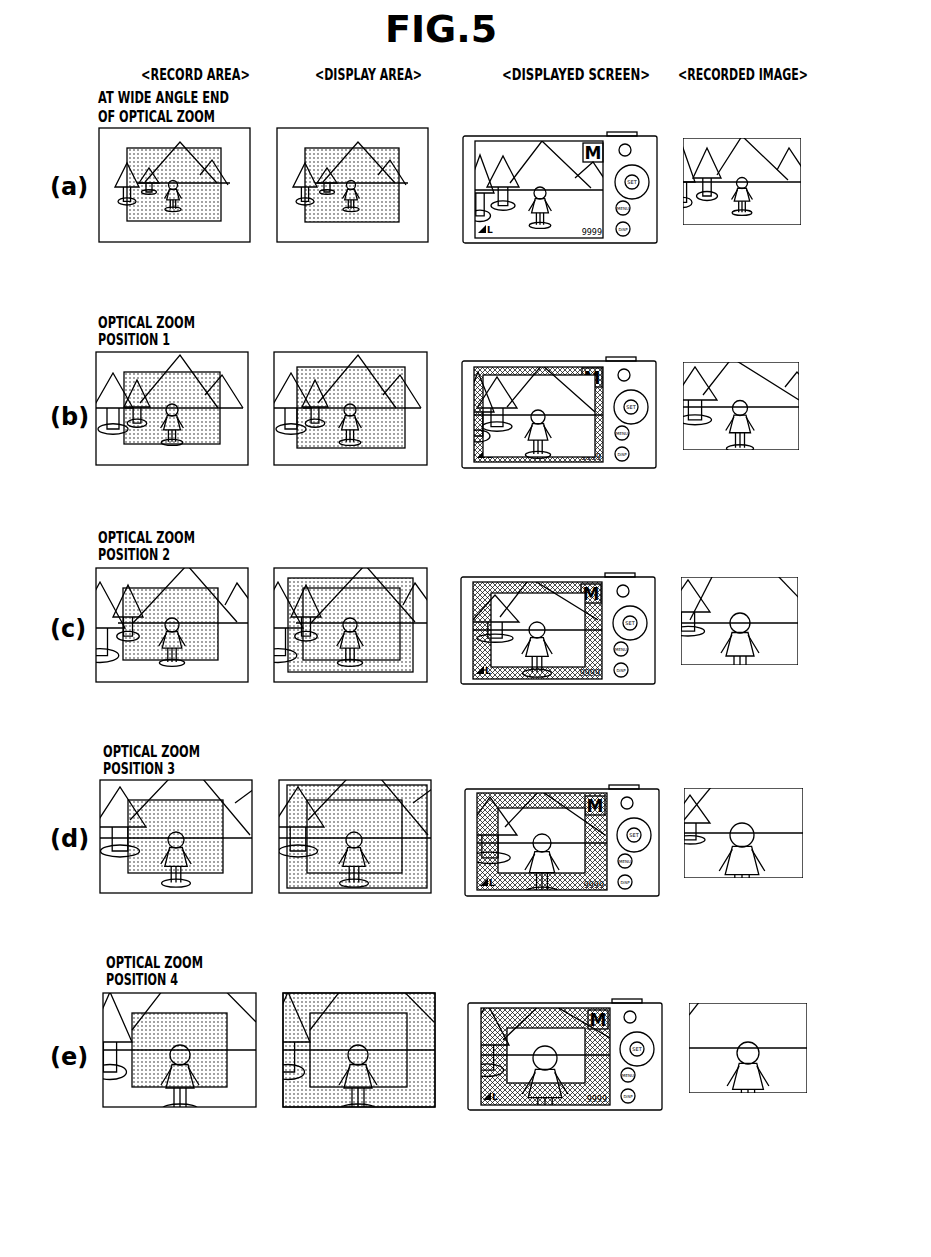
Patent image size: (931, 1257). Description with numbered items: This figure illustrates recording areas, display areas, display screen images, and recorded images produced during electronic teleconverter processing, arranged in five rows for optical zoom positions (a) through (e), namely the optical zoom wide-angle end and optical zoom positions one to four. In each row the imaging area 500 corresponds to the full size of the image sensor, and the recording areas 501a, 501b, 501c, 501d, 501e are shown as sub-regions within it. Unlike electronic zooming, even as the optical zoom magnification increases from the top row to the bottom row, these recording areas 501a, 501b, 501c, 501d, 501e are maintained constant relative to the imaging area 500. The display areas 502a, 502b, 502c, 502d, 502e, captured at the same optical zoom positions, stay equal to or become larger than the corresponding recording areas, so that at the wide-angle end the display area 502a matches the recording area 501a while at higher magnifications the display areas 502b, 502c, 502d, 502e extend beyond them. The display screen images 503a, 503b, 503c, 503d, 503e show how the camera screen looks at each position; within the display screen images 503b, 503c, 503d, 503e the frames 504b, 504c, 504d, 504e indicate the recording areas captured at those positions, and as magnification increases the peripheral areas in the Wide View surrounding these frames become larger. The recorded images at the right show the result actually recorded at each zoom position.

The imaging area 500 is at (225, 128).
The recording area 501a is at (200, 213).
The recording area 501b is at (207, 378).
The recording area 501c is at (205, 602).
The recording area 501d is at (207, 817).
The recording area 501e is at (217, 1025).
The display area 502a is at (378, 160).
The display area 502b is at (387, 377).
The display area 502c is at (392, 578).
The display area 502d is at (410, 792).
The display area 502e is at (415, 1005).
The display screen image 503a is at (568, 141).
The display screen image 503b is at (583, 365).
The display screen image 503c is at (575, 583).
The display screen image 503d is at (570, 798).
The display screen image 503e is at (575, 1010).
The frame 504b is at (518, 368).
The frame 504c is at (508, 588).
The frame 504d is at (532, 800).
The frame 504e is at (538, 1030).